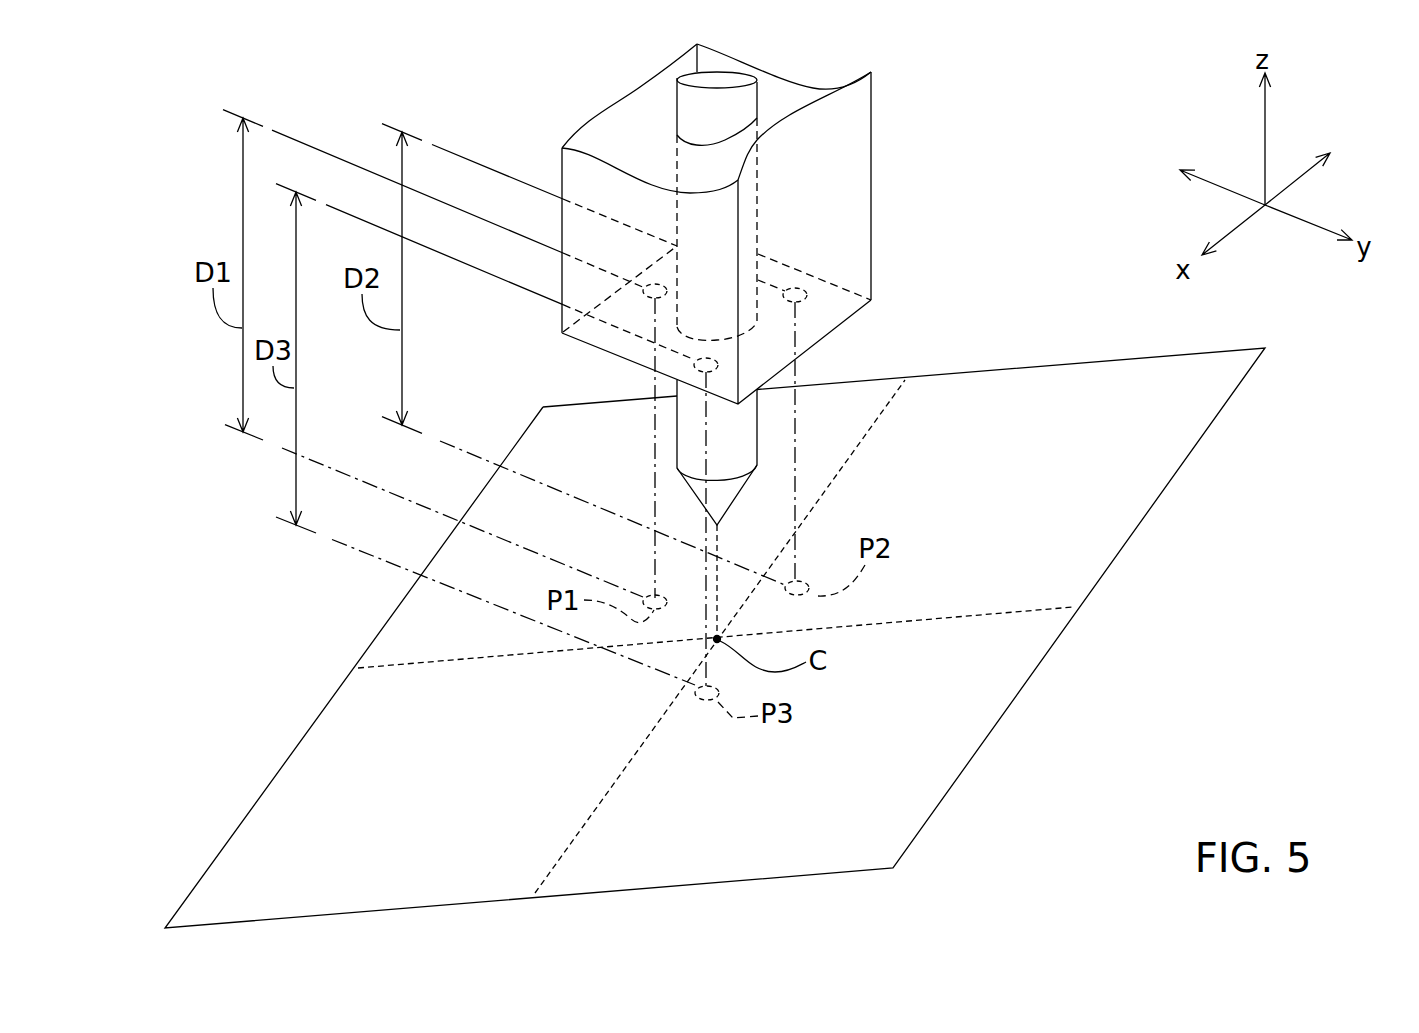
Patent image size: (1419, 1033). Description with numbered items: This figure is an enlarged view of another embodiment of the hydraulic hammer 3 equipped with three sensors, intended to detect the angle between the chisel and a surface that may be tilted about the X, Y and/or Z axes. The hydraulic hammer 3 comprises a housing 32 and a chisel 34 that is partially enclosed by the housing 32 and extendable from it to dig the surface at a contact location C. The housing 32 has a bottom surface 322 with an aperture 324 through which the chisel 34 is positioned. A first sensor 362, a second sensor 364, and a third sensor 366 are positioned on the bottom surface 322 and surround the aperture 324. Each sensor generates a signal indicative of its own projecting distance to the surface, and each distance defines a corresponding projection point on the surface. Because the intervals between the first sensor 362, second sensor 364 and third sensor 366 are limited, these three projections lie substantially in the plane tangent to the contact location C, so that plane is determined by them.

The hydraulic hammer 3 is at (979, 80).
The housing 32 is at (808, 187).
The chisel 34 is at (715, 453).
The bottom surface 322 is at (817, 312).
The aperture 324 is at (758, 388).
The first sensor 362 is at (645, 293).
The second sensor 364 is at (810, 293).
The third sensor 366 is at (722, 371).